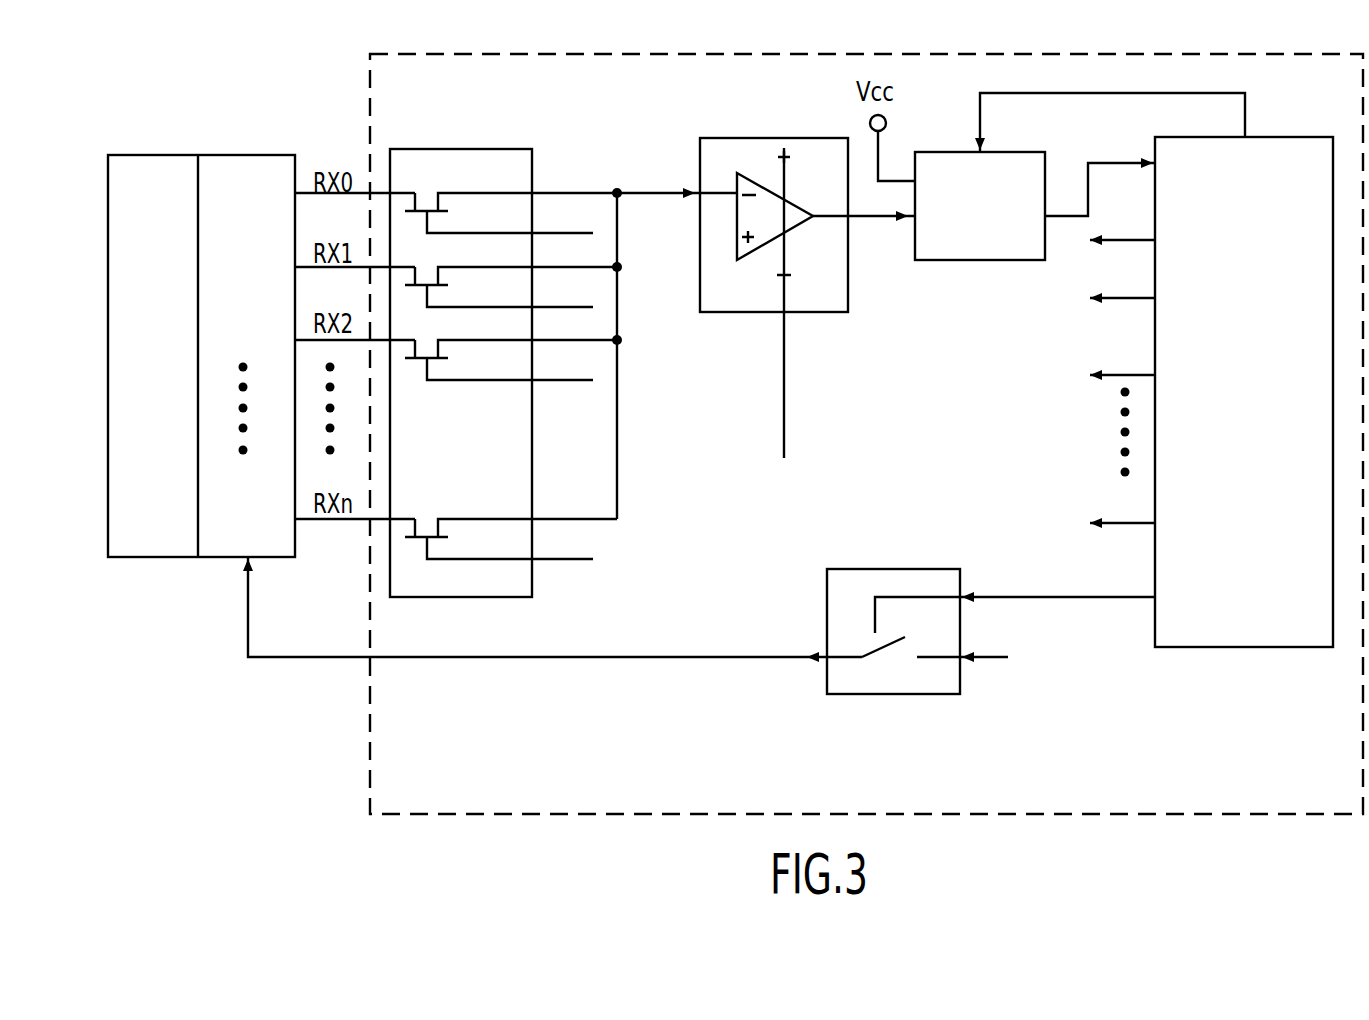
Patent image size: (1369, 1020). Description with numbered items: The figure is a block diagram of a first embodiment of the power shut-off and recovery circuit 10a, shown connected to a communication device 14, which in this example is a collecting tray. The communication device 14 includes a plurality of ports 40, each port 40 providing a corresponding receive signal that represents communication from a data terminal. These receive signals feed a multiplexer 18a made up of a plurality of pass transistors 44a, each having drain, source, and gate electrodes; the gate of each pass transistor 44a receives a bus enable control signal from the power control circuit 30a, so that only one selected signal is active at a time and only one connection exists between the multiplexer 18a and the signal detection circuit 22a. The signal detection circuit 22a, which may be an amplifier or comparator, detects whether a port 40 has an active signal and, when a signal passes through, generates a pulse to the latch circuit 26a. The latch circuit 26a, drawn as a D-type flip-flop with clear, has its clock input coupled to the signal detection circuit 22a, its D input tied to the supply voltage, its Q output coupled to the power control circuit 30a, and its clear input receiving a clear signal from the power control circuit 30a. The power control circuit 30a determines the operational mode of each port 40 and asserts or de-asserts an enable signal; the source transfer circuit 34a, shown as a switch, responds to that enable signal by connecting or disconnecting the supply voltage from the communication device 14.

The shut-off and recovery circuit 10a is at (370, 59).
The communication device 14 is at (201, 361).
The ports 40 is at (250, 152).
The multiplexer 18a is at (503, 397).
The pass transistor 44a is at (441, 200).
The signal detection circuit 22a is at (771, 300).
The latch circuit 26a is at (981, 264).
The power control circuit 30a is at (1231, 638).
The source transfer circuit 34a is at (881, 685).